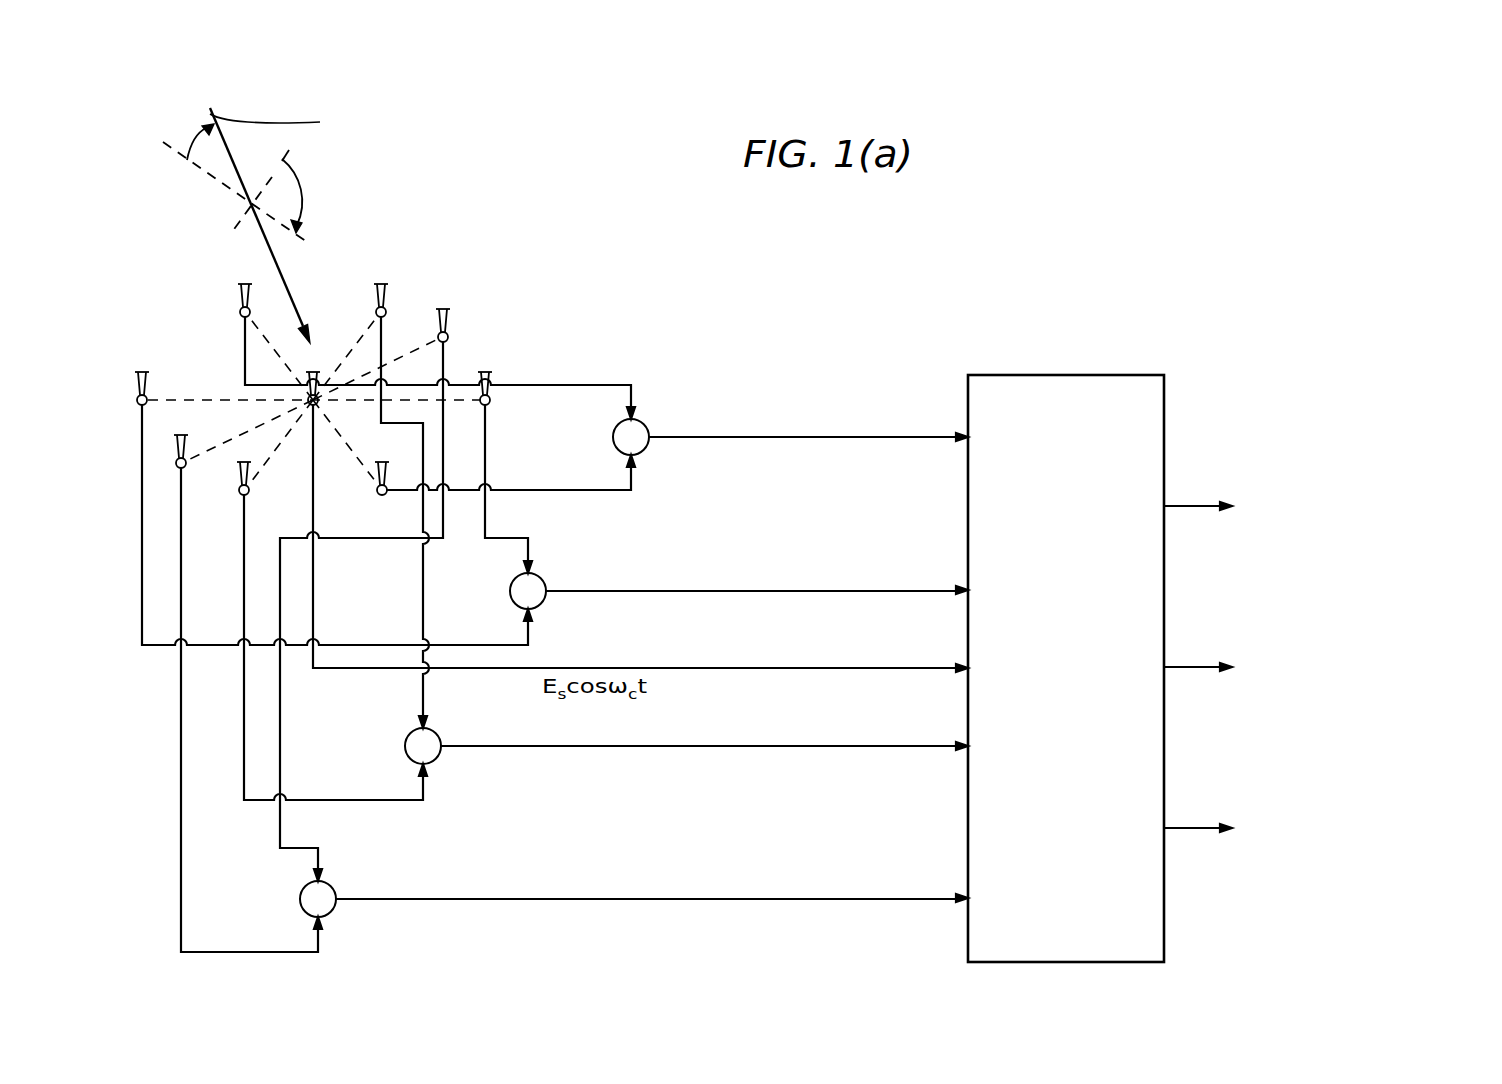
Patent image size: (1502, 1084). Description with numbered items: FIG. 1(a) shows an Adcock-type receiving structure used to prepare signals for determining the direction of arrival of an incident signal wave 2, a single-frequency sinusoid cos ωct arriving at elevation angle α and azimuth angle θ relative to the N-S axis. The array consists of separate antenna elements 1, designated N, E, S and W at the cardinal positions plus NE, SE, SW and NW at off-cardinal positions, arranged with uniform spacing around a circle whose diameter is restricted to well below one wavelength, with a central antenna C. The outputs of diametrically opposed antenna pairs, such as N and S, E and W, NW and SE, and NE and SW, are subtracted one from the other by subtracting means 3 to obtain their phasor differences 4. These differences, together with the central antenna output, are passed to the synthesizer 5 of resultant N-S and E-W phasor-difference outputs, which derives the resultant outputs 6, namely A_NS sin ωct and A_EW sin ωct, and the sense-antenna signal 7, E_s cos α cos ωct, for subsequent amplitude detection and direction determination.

The antenna elements 1 is at (423, 280).
The incident signal wave 2 is at (207, 187).
The subtracting means 3 is at (612, 438).
The phasor differences 4 is at (712, 623).
The synthesizer of resultant N-S and E-W phasor-difference outputs 5 is at (1045, 375).
The resultant phasor-difference outputs 6 is at (1313, 488).
The sense-antenna signal 7 is at (1315, 653).